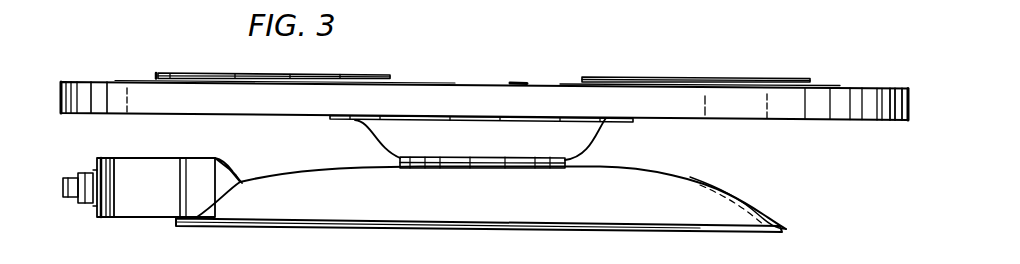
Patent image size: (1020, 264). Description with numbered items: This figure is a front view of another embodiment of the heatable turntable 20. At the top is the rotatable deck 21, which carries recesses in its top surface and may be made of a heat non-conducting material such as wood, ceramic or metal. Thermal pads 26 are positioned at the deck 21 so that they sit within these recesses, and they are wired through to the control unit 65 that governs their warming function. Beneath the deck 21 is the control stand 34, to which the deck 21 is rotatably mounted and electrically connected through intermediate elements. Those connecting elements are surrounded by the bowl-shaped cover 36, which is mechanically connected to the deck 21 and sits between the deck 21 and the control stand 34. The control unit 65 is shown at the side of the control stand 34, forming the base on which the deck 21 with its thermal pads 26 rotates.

The heatable turntable 20 is at (555, 64).
The rotatable deck 21 is at (877, 88).
The thermal pad 26 is at (199, 72).
The control stand 34 is at (722, 196).
The bowl-shaped cover 36 is at (578, 139).
The control unit 65 is at (156, 195).